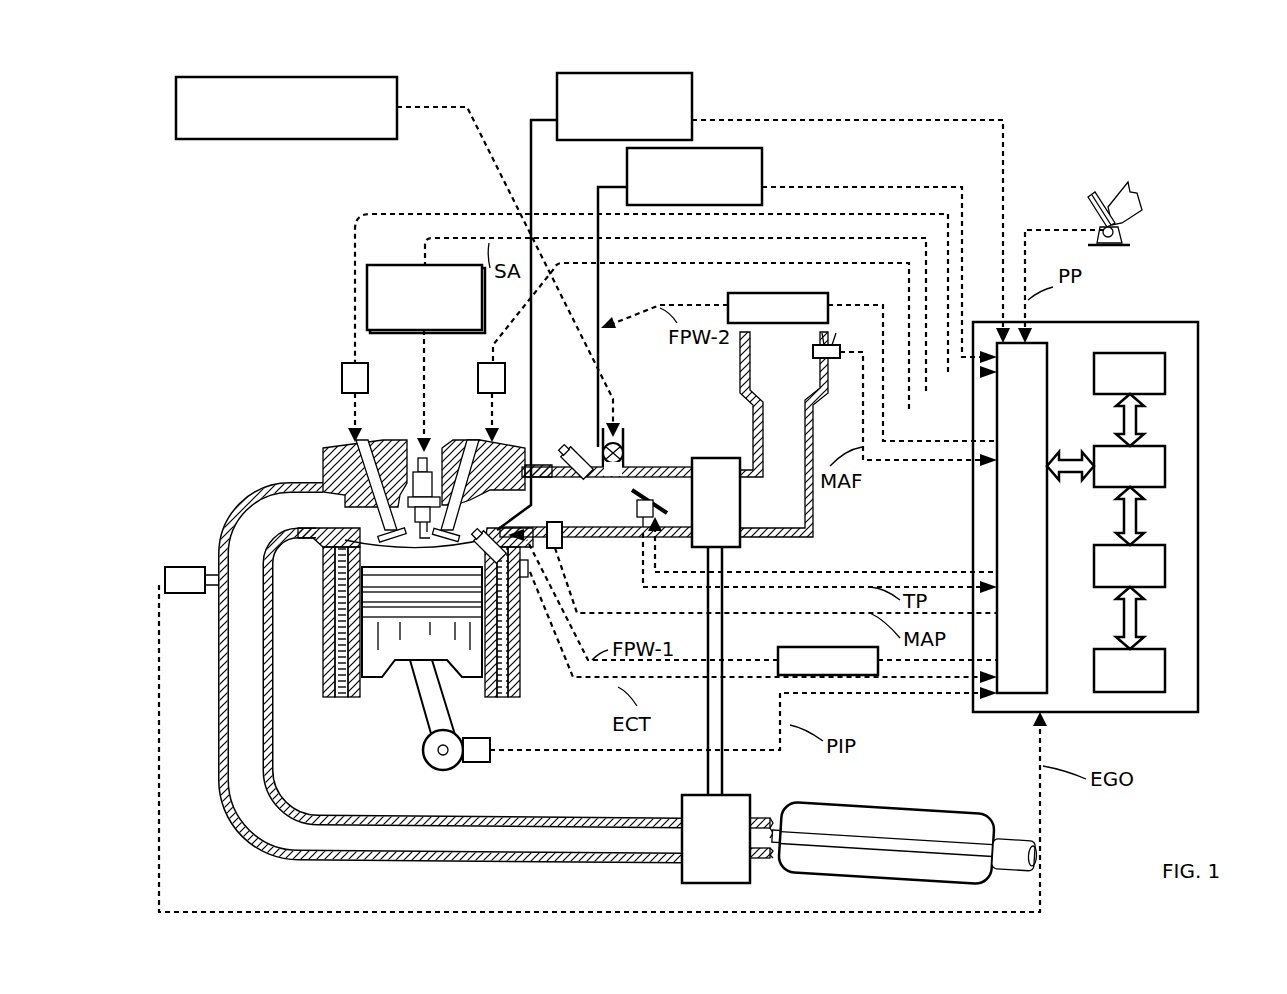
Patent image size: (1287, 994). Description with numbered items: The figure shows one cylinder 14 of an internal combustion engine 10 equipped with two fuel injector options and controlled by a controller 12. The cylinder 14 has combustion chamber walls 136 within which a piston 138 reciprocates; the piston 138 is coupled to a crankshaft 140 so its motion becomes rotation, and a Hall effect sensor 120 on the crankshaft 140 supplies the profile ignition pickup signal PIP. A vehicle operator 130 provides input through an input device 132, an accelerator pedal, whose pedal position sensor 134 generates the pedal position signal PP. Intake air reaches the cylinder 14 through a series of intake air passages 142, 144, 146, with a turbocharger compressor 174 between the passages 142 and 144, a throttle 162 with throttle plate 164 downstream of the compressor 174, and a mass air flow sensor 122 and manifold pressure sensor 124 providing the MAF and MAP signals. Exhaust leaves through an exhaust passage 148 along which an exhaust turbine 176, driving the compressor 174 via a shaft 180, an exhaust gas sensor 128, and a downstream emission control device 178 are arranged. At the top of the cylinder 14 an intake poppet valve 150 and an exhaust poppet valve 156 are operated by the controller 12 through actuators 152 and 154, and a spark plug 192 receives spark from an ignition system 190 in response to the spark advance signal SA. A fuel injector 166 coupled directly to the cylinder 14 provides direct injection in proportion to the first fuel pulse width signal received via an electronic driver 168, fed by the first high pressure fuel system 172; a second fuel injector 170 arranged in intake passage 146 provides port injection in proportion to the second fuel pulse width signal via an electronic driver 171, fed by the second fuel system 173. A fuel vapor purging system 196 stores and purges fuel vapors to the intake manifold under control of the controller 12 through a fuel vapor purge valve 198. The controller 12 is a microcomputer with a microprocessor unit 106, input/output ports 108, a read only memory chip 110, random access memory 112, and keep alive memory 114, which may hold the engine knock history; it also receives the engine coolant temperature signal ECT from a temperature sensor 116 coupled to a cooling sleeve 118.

The internal combustion engine 10 is at (252, 397).
The controller 12 is at (1198, 322).
The cylinder 14 is at (347, 557).
The microprocessor unit 106 is at (1165, 464).
The input/output ports 108 is at (1047, 352).
The read only memory chip 110 is at (1165, 372).
The random access memory 112 is at (1165, 572).
The keep alive memory 114 is at (1165, 675).
The temperature sensor 116 is at (528, 580).
The cooling sleeve 118 is at (500, 650).
The Hall effect sensor 120 is at (478, 762).
The mass air flow sensor 122 is at (838, 345).
The manifold pressure sensor 124 is at (556, 552).
The exhaust gas sensor 128 is at (165, 575).
The vehicle operator 130 is at (1150, 200).
The input device 132 is at (1090, 210).
The pedal position sensor 134 is at (1125, 232).
The combustion chamber walls 136 is at (366, 686).
The piston 138 is at (407, 650).
The crankshaft 140 is at (432, 766).
The intake air passage 142 is at (784, 434).
The intake air passage 144 is at (678, 502).
The intake air passage 146 is at (596, 502).
The exhaust passage 148 is at (453, 673).
The intake poppet valve 150 is at (460, 525).
The actuator 152 is at (480, 380).
The actuator 154 is at (340, 378).
The exhaust poppet valve 156 is at (383, 535).
The throttle 162 is at (637, 516).
The throttle plate 164 is at (658, 522).
The fuel injector 166 is at (493, 538).
The electronic driver 168 is at (778, 650).
The fuel injector 170 is at (578, 452).
The electronic driver 171 is at (728, 302).
The fuel system-1 172 is at (692, 84).
The fuel system-2 173 is at (762, 160).
The compressor 174 is at (696, 458).
The exhaust turbine 176 is at (682, 868).
The emission control device 178 is at (955, 818).
The shaft 180 is at (724, 770).
The ignition system 190 is at (377, 265).
The spark plug 192 is at (420, 485).
The fuel vapor purging system 196 is at (394, 253).
The fuel vapor purge valve 198 is at (626, 447).